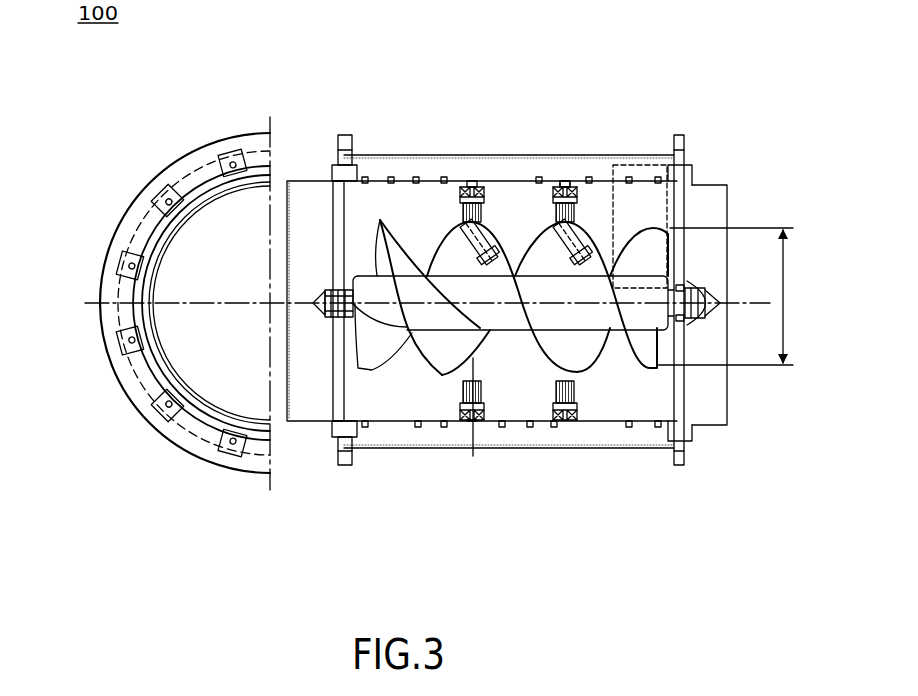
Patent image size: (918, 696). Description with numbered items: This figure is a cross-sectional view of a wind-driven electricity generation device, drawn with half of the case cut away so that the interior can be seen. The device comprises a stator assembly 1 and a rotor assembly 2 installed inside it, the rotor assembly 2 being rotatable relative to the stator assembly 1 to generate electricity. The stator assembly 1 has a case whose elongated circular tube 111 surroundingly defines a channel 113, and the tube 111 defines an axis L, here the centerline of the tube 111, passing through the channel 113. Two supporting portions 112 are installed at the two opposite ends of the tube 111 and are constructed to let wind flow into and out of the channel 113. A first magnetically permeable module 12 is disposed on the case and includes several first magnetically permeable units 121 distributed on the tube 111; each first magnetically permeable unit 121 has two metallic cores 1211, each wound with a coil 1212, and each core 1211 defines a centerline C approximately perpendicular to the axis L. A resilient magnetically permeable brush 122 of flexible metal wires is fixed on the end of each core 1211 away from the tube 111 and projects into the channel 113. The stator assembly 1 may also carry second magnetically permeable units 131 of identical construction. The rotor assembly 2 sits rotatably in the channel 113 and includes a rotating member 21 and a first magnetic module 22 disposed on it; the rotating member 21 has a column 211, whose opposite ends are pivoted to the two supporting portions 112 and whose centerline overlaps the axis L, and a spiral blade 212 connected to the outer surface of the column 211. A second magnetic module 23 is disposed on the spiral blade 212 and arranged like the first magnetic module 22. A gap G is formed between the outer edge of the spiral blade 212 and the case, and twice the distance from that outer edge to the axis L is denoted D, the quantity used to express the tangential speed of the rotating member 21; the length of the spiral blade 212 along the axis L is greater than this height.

The stator assembly 1 is at (702, 167).
The tube 111 is at (387, 162).
The supporting portion 112 is at (338, 210).
The channel 113 is at (316, 250).
The first magnetically permeable module 12 is at (572, 64).
The first magnetically permeable unit 121 is at (533, 108).
The core 1211 is at (473, 182).
The coil 1212 is at (466, 187).
The magnetically permeable brush 122 is at (488, 209).
The second magnetically permeable unit 131 is at (576, 181).
The rotor assembly 2 is at (573, 593).
The rotating member 21 is at (450, 541).
The column 211 is at (383, 312).
The spiral blade 212 is at (438, 347).
The first magnetic module 22 is at (495, 262).
The second magnetic module 23 is at (590, 262).
The gap G is at (380, 199).
The region A is at (641, 160).
The axis L is at (732, 303).
The element D is at (732, 296).
The centerline C is at (478, 372).